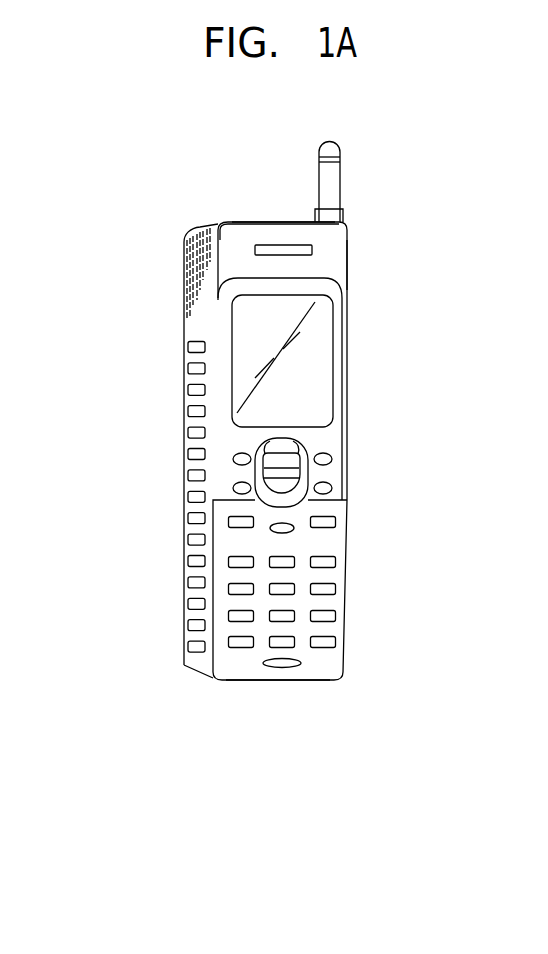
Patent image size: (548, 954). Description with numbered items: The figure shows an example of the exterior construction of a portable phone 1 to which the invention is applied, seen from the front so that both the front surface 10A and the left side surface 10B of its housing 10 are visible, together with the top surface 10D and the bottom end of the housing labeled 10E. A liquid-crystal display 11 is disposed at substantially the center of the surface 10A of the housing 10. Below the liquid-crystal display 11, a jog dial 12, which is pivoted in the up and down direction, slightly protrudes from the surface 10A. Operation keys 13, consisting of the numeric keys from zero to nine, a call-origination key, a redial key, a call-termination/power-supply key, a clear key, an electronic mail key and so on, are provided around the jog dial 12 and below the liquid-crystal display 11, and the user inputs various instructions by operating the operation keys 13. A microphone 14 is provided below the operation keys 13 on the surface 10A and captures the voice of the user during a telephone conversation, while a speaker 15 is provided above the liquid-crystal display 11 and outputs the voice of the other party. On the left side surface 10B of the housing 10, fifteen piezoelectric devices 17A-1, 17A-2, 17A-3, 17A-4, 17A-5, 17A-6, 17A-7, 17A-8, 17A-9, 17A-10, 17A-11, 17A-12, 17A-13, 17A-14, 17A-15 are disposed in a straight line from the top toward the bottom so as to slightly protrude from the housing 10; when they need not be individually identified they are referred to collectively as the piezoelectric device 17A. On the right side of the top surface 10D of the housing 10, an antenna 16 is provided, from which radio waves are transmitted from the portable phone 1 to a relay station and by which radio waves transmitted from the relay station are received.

The portable phone 1 is at (192, 715).
The housing 10 is at (352, 246).
The surface 10A is at (340, 275).
The surface 10B is at (197, 257).
The surface 10D is at (272, 222).
The bottom face of housing 10E is at (248, 681).
The liquid-crystal display 11 is at (318, 355).
The jog dial 12 is at (282, 468).
The operation keys 13 is at (355, 438).
The microphone 14 is at (287, 668).
The speaker 15 is at (267, 246).
The antenna 16 is at (342, 147).
The piezoelectric device 17A is at (82, 273).
The piezoelectric device 17A-1 is at (187, 347).
The piezoelectric device 17A-2 is at (187, 368).
The piezoelectric device 17A-3 is at (187, 390).
The piezoelectric device 17A-4 is at (187, 411).
The piezoelectric device 17A-5 is at (187, 433).
The piezoelectric device 17A-6 is at (187, 454).
The piezoelectric device 17A-7 is at (187, 475).
The piezoelectric device 17A-8 is at (187, 497).
The piezoelectric device 17A-9 is at (187, 518).
The piezoelectric device 17A-10 is at (187, 540).
The piezoelectric device 17A-11 is at (187, 561).
The piezoelectric device 17A-12 is at (187, 582).
The piezoelectric device 17A-13 is at (187, 604).
The piezoelectric device 17A-14 is at (187, 625).
The piezoelectric device 17A-15 is at (187, 647).